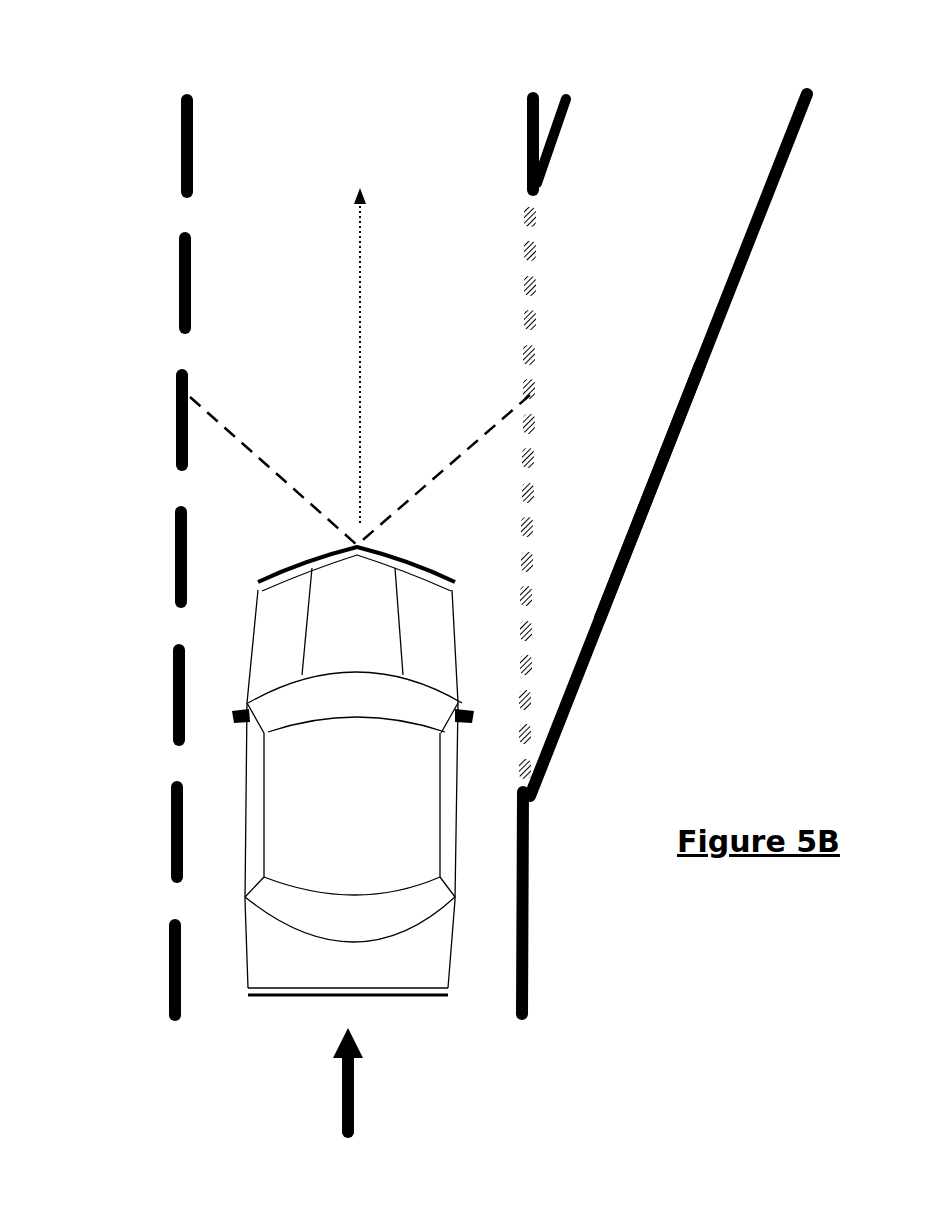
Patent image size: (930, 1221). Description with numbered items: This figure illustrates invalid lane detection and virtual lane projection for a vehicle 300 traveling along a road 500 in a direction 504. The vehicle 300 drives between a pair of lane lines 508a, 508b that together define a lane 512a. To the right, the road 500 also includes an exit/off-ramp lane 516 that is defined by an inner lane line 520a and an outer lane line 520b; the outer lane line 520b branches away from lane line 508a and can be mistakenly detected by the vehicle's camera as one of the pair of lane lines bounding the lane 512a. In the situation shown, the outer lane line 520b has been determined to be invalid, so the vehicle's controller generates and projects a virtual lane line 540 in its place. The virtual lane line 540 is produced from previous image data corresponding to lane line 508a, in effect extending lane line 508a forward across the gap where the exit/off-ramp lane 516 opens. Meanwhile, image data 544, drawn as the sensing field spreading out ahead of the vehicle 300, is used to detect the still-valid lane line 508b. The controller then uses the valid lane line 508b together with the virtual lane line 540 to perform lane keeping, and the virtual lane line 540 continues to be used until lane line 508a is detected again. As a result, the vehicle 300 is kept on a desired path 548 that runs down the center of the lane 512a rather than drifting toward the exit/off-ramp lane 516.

The vehicle 300 is at (420, 996).
The road 500 is at (146, 1098).
The direction 504 is at (342, 1103).
The lane line 508a is at (527, 100).
The lane line 508b is at (195, 148).
The lane 512a is at (360, 82).
The exit/off-ramp lane 516 is at (692, 84).
The inner lane line 520a is at (572, 100).
The outer lane line 520b is at (654, 508).
The virtual lane line 540 is at (536, 363).
The image data 544 is at (315, 542).
The desired path 548 is at (360, 360).